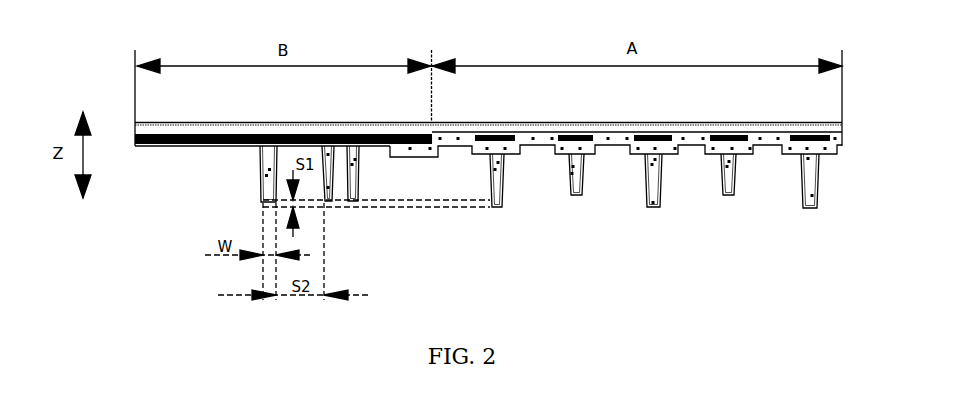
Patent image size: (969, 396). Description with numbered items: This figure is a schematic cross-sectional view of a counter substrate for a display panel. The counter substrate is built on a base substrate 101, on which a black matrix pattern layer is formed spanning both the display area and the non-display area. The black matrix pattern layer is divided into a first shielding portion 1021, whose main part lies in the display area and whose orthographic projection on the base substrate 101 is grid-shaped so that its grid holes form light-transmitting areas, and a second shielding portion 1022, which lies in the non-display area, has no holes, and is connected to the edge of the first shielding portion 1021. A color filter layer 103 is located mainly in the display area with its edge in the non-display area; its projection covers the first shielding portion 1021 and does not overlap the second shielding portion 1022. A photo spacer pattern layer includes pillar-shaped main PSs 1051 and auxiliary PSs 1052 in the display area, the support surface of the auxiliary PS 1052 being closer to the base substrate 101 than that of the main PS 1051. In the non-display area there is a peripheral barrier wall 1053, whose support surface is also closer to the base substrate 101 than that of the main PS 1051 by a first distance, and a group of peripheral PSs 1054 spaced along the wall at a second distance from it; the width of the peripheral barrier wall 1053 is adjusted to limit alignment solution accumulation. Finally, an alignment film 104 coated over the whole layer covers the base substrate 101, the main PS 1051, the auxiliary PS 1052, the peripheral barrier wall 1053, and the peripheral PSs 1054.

The base substrate 101 is at (199, 130).
The second shielding portion 1022 is at (370, 136).
The first shielding portion 1021 is at (487, 135).
The alignment film 104 is at (457, 148).
The color filter layer 103 is at (620, 143).
The peripheral barrier wall 1053 is at (266, 166).
The peripheral PS 1054 is at (357, 166).
The main PS 1051 is at (503, 172).
The auxiliary PS 1052 is at (501, 186).